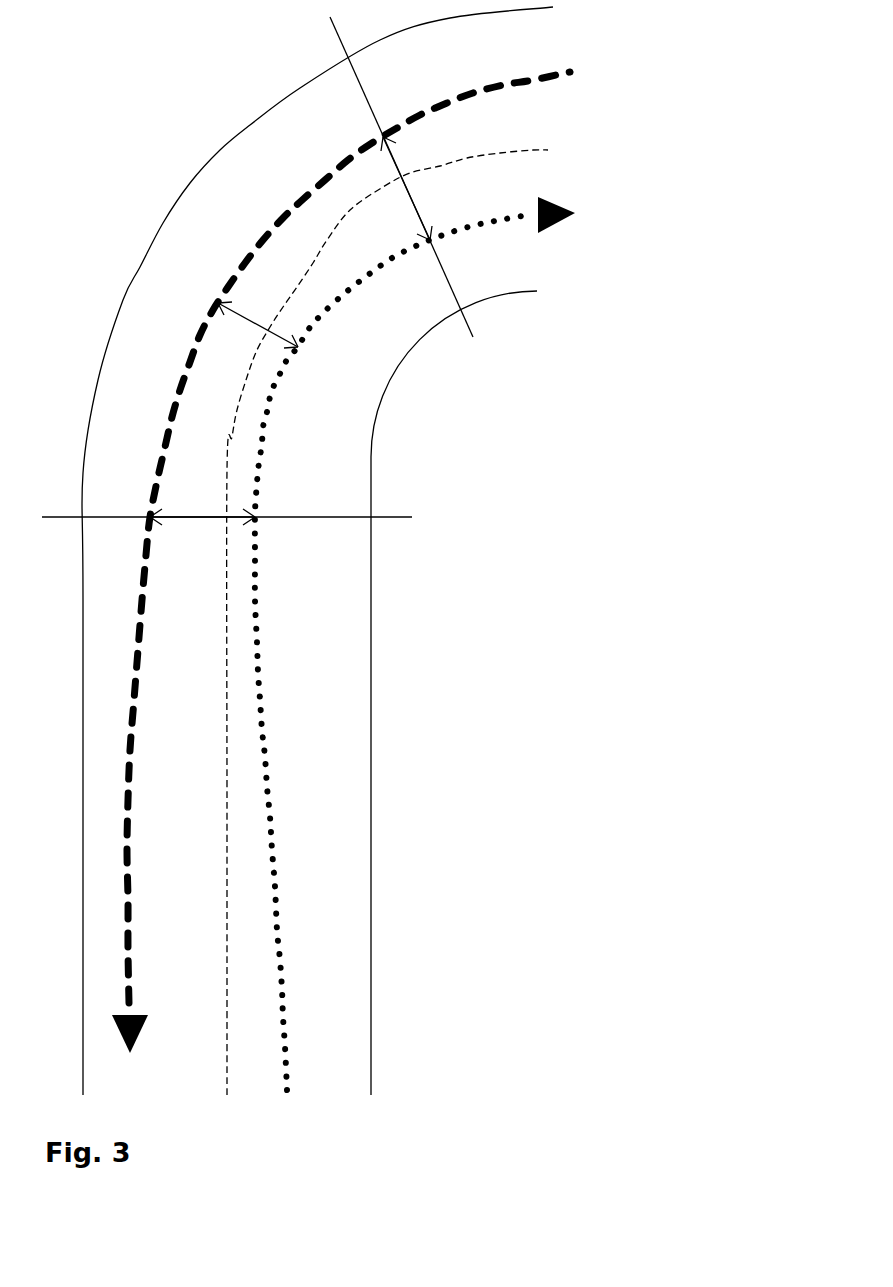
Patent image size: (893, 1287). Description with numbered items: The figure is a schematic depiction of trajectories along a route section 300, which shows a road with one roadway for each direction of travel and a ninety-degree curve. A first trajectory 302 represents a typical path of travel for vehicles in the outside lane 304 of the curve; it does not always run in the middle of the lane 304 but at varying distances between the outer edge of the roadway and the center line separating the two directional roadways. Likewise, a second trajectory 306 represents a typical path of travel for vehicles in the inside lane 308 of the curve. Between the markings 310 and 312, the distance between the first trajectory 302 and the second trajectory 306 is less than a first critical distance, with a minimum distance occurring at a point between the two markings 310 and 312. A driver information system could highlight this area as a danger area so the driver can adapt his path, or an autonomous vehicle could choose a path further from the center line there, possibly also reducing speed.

The route section 300 is at (128, 107).
The first trajectory 302 is at (137, 808).
The outside lane 304 is at (317, 554).
The second trajectory 306 is at (263, 663).
The inside lane 308 is at (427, 693).
The marking 310 is at (431, 189).
The marking 312 is at (259, 531).